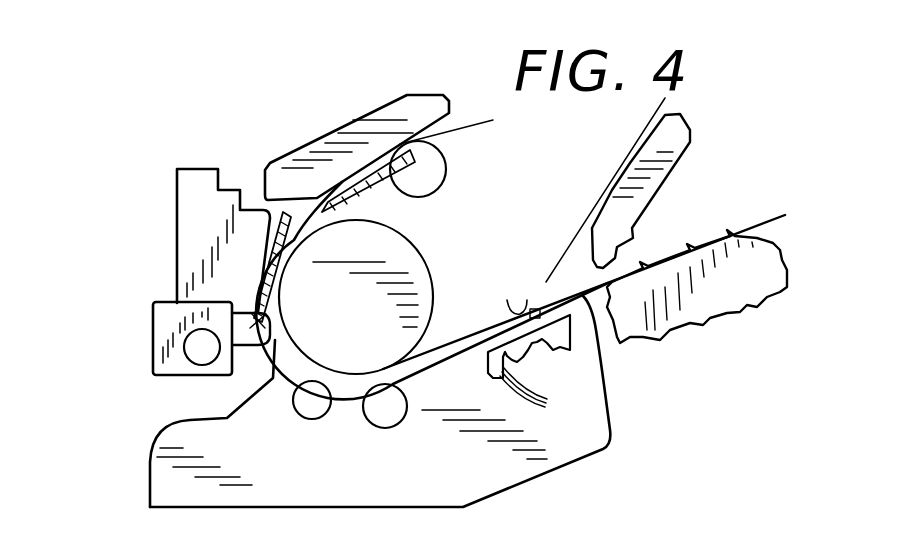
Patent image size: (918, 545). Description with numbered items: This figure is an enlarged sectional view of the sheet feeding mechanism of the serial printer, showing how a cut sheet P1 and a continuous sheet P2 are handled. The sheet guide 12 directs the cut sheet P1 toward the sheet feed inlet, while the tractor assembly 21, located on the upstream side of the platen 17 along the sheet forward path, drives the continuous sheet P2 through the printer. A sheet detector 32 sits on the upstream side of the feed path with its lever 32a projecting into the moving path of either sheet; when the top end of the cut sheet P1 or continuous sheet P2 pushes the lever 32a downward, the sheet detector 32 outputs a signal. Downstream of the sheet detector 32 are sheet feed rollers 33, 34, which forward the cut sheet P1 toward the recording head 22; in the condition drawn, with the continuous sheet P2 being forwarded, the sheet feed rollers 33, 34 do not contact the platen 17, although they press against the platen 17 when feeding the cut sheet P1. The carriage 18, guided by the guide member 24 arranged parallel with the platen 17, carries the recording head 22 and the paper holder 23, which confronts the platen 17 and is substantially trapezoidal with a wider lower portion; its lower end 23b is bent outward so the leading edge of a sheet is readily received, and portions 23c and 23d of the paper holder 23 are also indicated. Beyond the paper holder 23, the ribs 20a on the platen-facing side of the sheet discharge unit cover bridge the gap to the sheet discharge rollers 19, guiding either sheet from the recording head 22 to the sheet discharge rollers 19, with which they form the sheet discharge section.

The sheet guide 12 is at (617, 223).
The platen 17 is at (421, 262).
The carriage 18 is at (160, 331).
The sheet discharge rollers 19 is at (447, 168).
The ribs 20a is at (407, 108).
The tractor assembly 21 is at (725, 302).
The recording head 22 is at (177, 240).
The paper holder 23 is at (260, 268).
The lower end 23b is at (250, 325).
The blade tip 23c is at (289, 213).
The blade pivot portion 23d is at (260, 320).
The guide member 24 is at (195, 358).
The sheet detector 32 is at (572, 354).
The lever 32a is at (527, 300).
The sheet feed roller 33 is at (387, 420).
The sheet feed roller 34 is at (312, 408).
The cut sheet P1 is at (657, 95).
The continuous sheet P2 is at (458, 128).